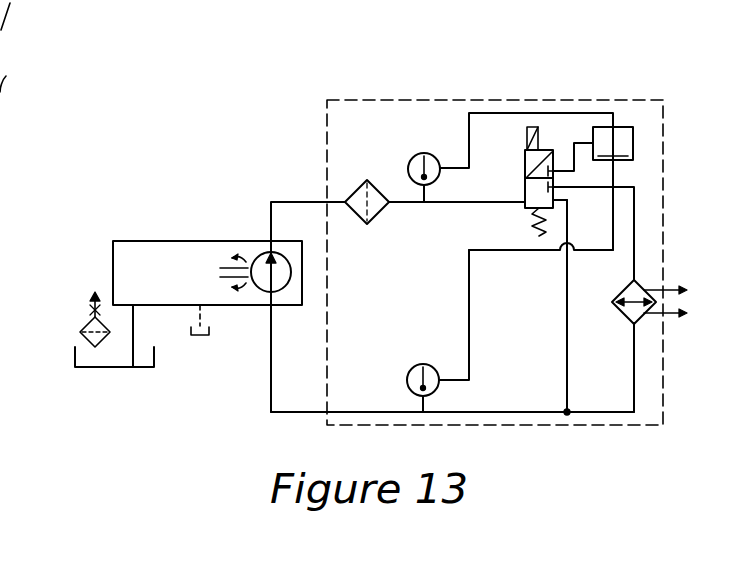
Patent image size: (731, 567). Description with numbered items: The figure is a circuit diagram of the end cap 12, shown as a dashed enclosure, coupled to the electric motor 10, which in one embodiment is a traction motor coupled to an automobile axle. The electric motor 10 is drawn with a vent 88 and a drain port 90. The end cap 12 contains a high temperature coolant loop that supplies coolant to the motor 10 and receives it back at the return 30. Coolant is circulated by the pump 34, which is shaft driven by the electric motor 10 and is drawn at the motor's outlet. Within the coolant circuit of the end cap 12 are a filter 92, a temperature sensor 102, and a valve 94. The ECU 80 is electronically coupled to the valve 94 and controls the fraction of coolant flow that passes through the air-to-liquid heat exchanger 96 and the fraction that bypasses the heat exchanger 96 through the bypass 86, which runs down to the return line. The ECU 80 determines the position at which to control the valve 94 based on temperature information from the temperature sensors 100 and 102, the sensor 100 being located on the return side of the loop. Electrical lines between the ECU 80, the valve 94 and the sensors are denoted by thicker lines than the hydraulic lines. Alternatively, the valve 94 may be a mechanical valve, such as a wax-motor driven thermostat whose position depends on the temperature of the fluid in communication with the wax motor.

The electric motor 10 is at (146, 248).
The end cap 12 is at (563, 86).
The return 30 is at (318, 414).
The pump 34 is at (265, 283).
The ECU 80 is at (613, 143).
The bypass 86 is at (565, 385).
The vent 88 is at (87, 368).
The drain port 90 is at (197, 338).
The filter 92 is at (360, 180).
The valve 94 is at (525, 168).
The air-to-liquid heat exchanger 96 is at (612, 322).
The temperature sensor 100 is at (407, 392).
The temperature sensor 102 is at (443, 153).